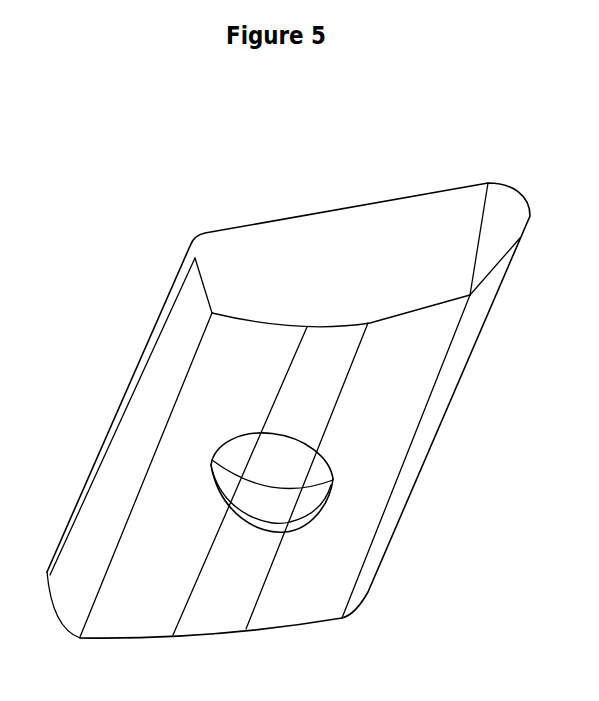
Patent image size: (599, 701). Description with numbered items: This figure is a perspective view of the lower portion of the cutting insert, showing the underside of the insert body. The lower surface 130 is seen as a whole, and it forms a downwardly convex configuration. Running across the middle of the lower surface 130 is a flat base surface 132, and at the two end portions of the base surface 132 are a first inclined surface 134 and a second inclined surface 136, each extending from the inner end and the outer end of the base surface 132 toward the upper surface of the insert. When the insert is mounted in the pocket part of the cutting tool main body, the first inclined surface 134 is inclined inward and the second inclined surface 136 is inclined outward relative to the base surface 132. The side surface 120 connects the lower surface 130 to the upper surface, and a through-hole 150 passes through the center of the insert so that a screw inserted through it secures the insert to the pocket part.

The side surface 120 is at (133, 417).
The lower surface 130 is at (250, 125).
The base surface 132 is at (338, 337).
The first inclined surface 134 is at (260, 337).
The second inclined surface 136 is at (423, 325).
The through-hole 150 is at (295, 477).